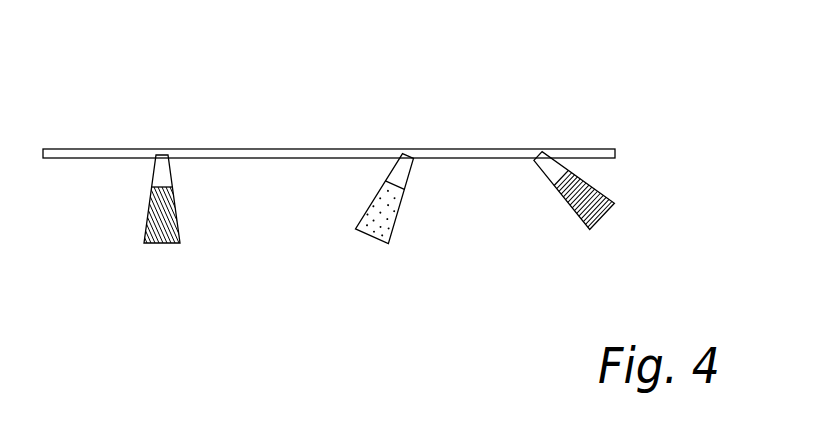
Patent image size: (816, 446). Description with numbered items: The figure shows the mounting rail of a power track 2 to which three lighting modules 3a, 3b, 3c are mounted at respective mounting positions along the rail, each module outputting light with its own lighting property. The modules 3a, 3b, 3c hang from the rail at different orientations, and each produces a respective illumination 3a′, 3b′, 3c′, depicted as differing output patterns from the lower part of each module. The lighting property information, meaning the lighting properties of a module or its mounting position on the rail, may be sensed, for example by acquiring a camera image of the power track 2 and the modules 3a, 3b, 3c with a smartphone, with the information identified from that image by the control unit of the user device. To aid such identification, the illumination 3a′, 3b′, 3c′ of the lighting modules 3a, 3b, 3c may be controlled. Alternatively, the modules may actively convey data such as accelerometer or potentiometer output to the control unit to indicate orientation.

The power track 2 is at (615, 155).
The lighting module 3a is at (152, 172).
The illumination 3a′ is at (179, 217).
The lighting module 3b is at (390, 170).
The illumination 3b′ is at (396, 220).
The lighting module 3c is at (550, 167).
The illumination 3c′ is at (565, 200).